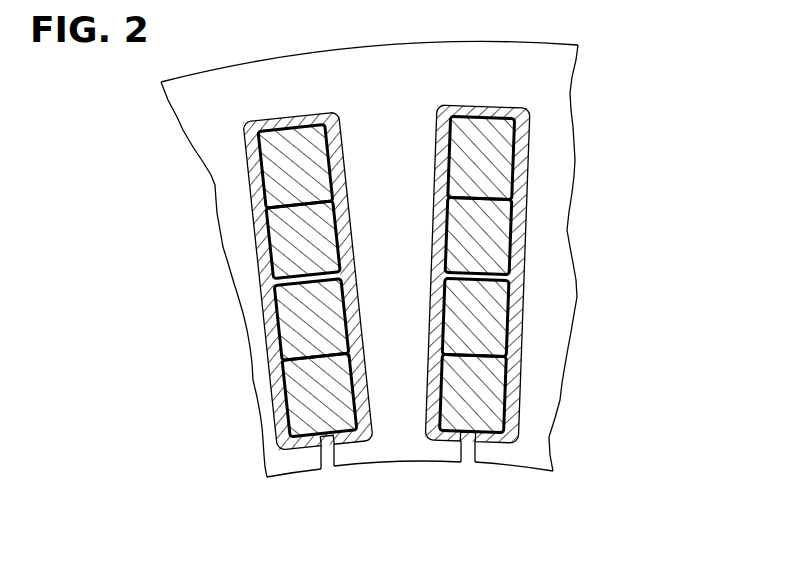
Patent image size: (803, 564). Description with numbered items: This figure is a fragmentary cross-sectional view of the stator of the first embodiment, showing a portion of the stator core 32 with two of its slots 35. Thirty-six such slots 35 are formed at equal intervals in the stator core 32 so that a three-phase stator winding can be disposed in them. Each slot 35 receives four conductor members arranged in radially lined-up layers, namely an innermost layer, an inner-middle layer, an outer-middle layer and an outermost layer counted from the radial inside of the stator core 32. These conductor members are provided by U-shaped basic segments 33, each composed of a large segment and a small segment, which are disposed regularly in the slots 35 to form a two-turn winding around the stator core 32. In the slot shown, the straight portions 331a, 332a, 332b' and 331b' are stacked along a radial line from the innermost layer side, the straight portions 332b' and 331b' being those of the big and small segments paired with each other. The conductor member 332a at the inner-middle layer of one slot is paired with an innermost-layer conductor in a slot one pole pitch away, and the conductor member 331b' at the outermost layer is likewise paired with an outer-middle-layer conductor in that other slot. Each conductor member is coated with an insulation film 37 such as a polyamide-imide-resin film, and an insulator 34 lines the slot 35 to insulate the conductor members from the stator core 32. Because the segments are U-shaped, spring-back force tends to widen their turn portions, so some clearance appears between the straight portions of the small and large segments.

The stator core 32 is at (381, 58).
The basic segment 33 is at (594, 272).
The straight portion of large segment 331a is at (563, 393).
The straight portion of small segment 332a is at (489, 314).
The straight portion of large segment at outermost layer 331b' is at (565, 157).
The straight portion of small segment at outer-middle layer 332b' is at (563, 235).
The insulator 34 is at (533, 113).
The slot 35 is at (468, 446).
The insulation film 37 is at (253, 172).